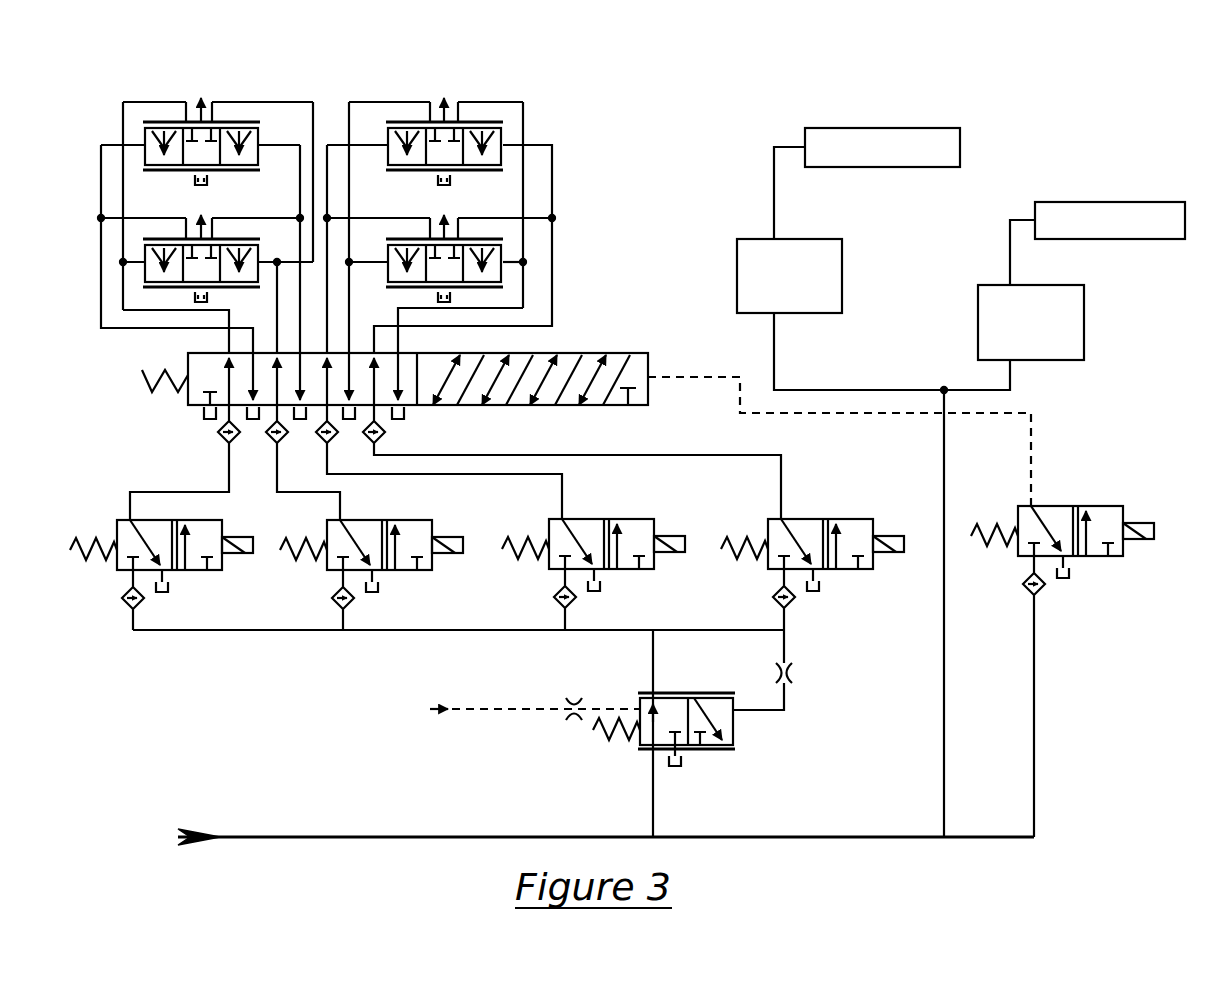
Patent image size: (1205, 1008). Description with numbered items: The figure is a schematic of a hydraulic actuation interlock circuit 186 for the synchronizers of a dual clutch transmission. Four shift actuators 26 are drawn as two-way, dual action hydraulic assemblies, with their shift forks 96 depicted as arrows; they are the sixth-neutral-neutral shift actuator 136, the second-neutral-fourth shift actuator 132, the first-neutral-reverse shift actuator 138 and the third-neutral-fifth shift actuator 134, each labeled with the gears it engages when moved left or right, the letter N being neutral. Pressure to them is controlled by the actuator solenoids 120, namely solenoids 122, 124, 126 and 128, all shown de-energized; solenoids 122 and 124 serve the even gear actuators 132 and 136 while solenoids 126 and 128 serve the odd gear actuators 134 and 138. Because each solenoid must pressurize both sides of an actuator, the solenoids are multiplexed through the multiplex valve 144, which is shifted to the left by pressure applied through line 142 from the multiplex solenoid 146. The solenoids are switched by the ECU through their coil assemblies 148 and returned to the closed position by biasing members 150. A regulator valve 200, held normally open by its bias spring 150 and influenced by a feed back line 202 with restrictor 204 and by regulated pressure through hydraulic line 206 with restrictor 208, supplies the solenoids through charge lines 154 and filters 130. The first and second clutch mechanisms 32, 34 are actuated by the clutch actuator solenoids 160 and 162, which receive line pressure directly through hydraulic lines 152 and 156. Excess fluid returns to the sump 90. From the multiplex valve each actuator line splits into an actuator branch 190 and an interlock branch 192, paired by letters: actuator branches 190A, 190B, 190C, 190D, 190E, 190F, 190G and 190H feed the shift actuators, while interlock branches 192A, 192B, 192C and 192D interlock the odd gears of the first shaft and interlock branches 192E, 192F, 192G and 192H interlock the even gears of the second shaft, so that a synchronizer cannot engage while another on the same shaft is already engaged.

The shift actuator 26 is at (580, 120).
The first clutch mechanism 32 is at (1090, 192).
The second clutch mechanism 34 is at (824, 118).
The transmission sump 90 is at (404, 412).
The shift fork 96 is at (186, 118).
The actuator solenoid 120 is at (116, 508).
The actuator solenoid 122 is at (215, 570).
The actuator solenoid 124 is at (425, 570).
The actuator solenoid 126 is at (655, 569).
The actuator solenoid 128 is at (873, 569).
The filter 130 is at (385, 434).
The 2-N-4 shift actuator 132 is at (222, 238).
The 3-N-5 shift actuator 134 is at (465, 238).
The 6-N-N shift actuator 136 is at (222, 121).
The 1-N-R shift actuator 138 is at (465, 121).
The hydraulic line 142 is at (665, 377).
The multiplex valve 144 is at (630, 353).
The multiplex solenoid 146 is at (1088, 506).
The coil assembly 148 is at (235, 553).
The biasing member 150 is at (145, 395).
The hydraulic line 152 is at (835, 837).
The charge line 154 is at (133, 632).
The hydraulic line 156 is at (944, 460).
The first clutch actuator solenoid 160 is at (963, 290).
The second clutch actuator solenoid 162 is at (852, 255).
The synchronizer actuation interlock circuit 186 is at (540, 120).
The actuator branch 190 is at (578, 147).
The actuator branch 190A is at (552, 185).
The actuator branch 190B is at (526, 300).
The actuator branch 190C is at (352, 282).
The actuator branch 190D is at (372, 140).
The actuator branch 190E is at (277, 285).
The actuator branch 190F is at (300, 145).
The actuator branch 190G is at (123, 310).
The actuator branch 190H is at (101, 185).
The interlock branch 192 is at (578, 223).
The interlock branch 192A is at (526, 204).
The interlock branch 192B is at (528, 235).
The interlock branch 192C is at (349, 102).
The interlock branch 192D is at (365, 218).
The interlock branch 192E is at (313, 102).
The interlock branch 192F is at (300, 218).
The interlock branch 192G is at (123, 240).
The interlock branch 192H is at (126, 218).
The regulator valve 200 is at (642, 766).
The feed back line 202 is at (785, 660).
The restrictor 204 is at (795, 675).
The hydraulic line 206 is at (510, 712).
The restrictor 208 is at (576, 698).